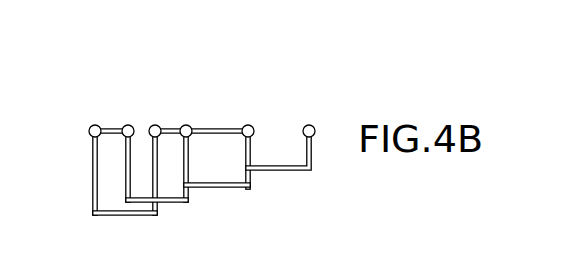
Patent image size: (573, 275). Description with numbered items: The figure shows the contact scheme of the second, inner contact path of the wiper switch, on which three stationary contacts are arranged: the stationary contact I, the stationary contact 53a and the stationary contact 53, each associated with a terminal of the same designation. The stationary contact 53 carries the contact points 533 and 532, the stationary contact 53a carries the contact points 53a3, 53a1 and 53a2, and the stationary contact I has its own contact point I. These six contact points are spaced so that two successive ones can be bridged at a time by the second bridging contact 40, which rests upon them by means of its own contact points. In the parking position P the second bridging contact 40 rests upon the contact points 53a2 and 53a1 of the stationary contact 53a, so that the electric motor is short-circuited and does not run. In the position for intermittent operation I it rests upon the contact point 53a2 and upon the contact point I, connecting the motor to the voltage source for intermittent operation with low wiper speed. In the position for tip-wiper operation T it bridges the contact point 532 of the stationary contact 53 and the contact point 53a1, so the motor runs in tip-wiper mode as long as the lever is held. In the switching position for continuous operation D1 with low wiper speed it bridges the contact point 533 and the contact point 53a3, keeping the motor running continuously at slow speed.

The stationary contact 53 is at (143, 79).
The contact point 533 is at (95, 124).
The contact point 532 is at (128, 124).
The stationary contact 53a is at (273, 46).
The contact point 53a3 is at (155, 124).
The contact point 53a1 is at (186, 124).
The contact point 53a2 is at (244, 124).
The switching position for continuous operation with low wiper speed D1 is at (97, 216).
The position for tip-wiper operation T is at (171, 204).
The parking position P is at (205, 189).
The second bridging contact 40 is at (217, 212).
The stationary contact / position for intermittent operation I is at (308, 125).